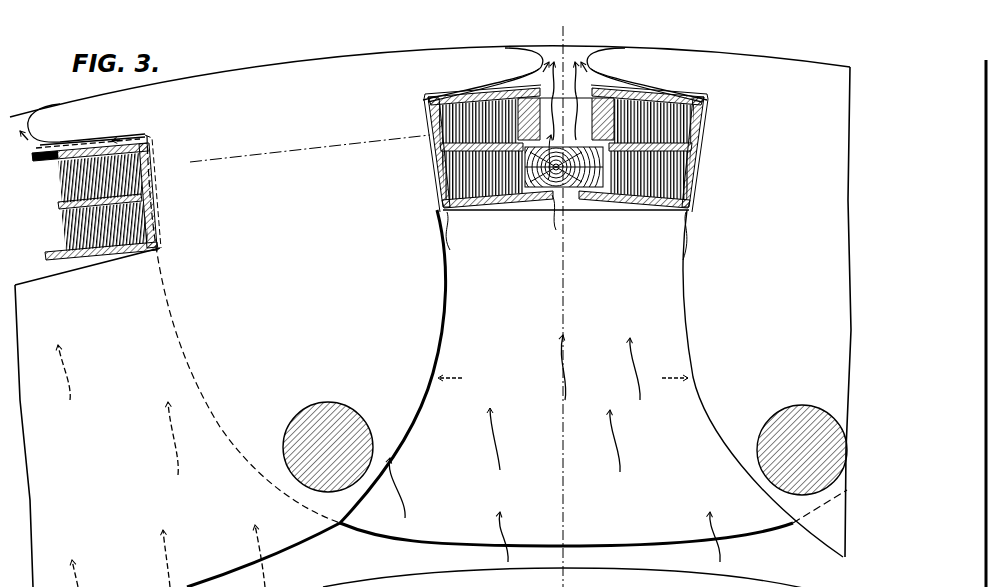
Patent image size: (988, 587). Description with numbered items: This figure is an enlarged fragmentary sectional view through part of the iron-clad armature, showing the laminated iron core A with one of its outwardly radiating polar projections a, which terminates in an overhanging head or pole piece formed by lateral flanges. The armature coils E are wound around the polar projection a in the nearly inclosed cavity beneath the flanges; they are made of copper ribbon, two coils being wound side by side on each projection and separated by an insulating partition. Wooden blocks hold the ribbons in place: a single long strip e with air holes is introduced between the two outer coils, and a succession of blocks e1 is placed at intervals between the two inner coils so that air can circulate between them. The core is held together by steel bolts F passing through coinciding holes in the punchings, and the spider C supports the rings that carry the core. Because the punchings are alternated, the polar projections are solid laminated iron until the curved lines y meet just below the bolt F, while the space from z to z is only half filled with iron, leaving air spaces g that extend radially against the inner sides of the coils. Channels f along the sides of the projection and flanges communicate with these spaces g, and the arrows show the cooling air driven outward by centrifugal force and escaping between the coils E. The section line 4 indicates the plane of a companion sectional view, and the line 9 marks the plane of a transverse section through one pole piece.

The section line 4- 4 is at (562, 295).
The section line 9- 9 is at (143, 168).
The polar projection a is at (430, 316).
The channel f is at (484, 92).
The armature coil E is at (125, 162).
The strip e is at (565, 102).
The block e1 is at (571, 190).
The air space g is at (515, 398).
The boundary of half-filled space z is at (563, 380).
The bolt F is at (303, 405).
The curved line y is at (276, 329).
The laminated iron core A is at (593, 495).
The spider C is at (357, 570).